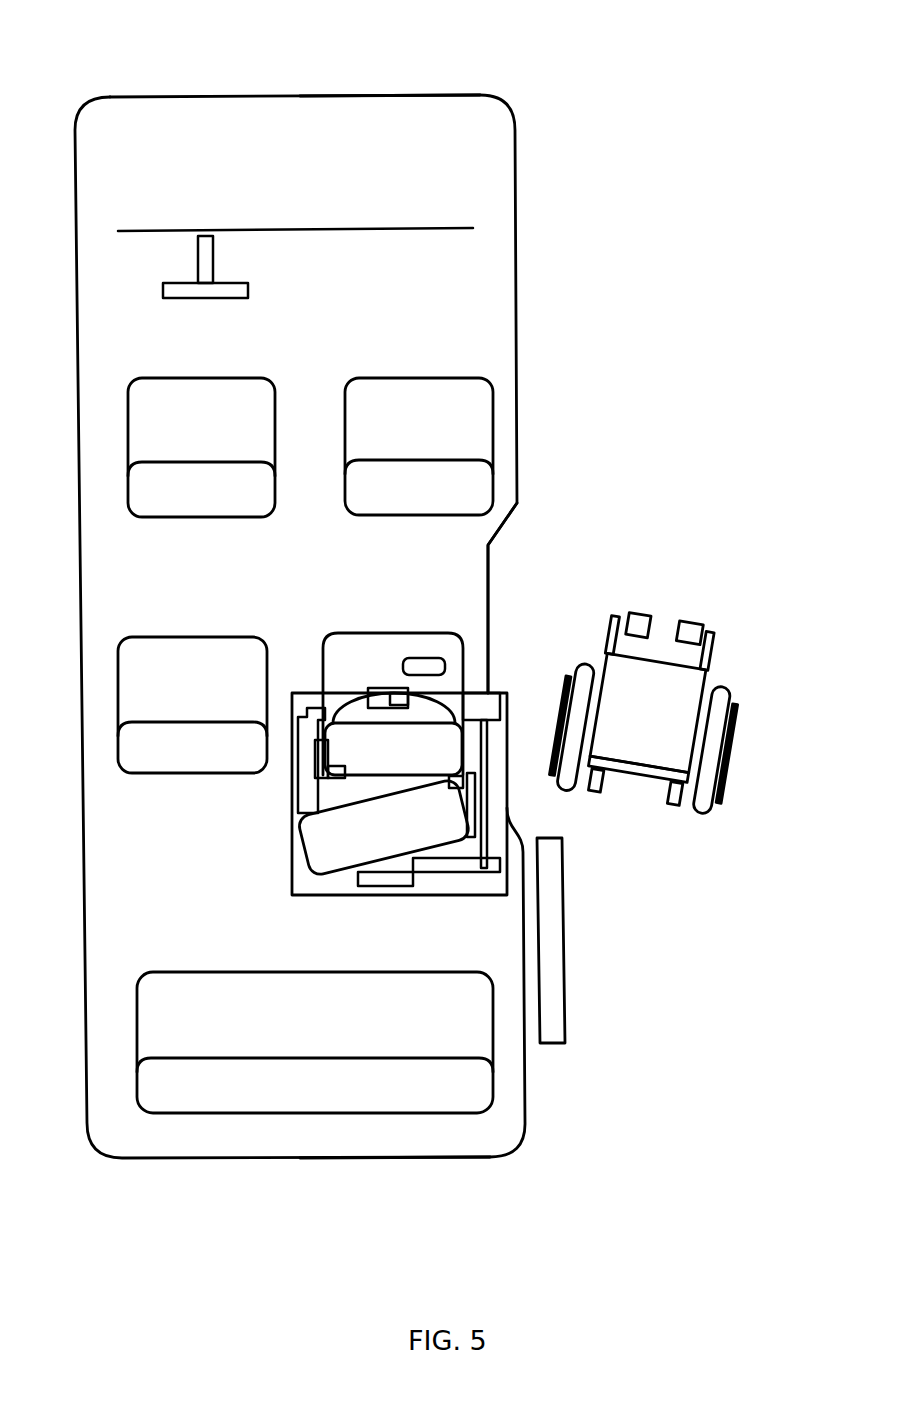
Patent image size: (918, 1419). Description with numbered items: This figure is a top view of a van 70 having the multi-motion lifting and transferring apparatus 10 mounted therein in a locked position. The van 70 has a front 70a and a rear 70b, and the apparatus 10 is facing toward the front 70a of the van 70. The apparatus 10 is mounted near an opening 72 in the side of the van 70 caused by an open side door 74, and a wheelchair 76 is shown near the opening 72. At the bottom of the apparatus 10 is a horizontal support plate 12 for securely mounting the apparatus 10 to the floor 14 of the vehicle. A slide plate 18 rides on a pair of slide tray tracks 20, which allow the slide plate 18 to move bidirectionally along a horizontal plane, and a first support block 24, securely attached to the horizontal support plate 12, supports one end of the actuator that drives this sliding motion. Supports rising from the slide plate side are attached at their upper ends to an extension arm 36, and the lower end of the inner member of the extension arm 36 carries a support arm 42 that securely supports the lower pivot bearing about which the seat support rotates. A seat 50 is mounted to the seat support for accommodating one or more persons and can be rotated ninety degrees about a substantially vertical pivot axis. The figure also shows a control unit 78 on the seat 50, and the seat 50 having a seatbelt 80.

The multi-motion lifting and transferring apparatus 10 is at (368, 742).
The horizontal support plate 12 is at (345, 885).
The floor 14 is at (334, 655).
The slide plate 18 is at (303, 777).
The slide tray tracks 20 is at (480, 690).
The first support block 24 is at (292, 832).
The extension arm 36 is at (332, 858).
The support arm 42 is at (477, 808).
The seat 50 is at (365, 663).
The van 70 is at (475, 263).
The front 70a is at (323, 92).
The rear 70b is at (423, 1155).
The opening 72 is at (520, 577).
The side door 74 is at (557, 945).
The wheelchair 76 is at (653, 693).
The control unit 78 is at (422, 662).
The seatbelt 80 is at (342, 708).